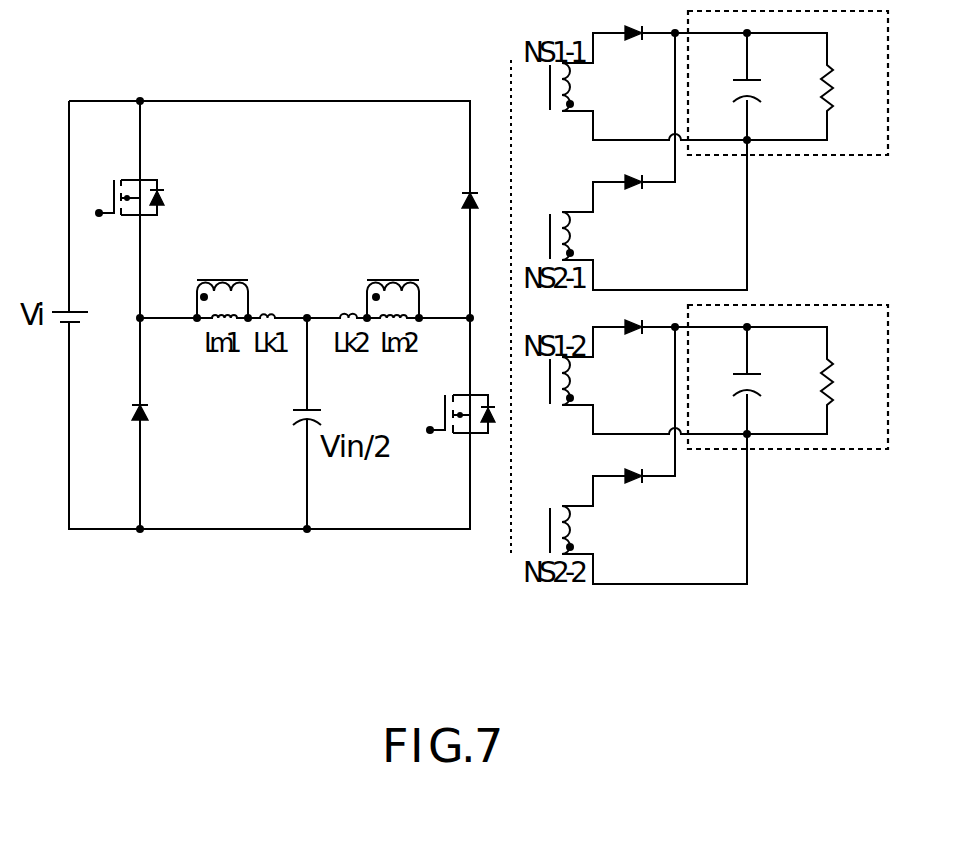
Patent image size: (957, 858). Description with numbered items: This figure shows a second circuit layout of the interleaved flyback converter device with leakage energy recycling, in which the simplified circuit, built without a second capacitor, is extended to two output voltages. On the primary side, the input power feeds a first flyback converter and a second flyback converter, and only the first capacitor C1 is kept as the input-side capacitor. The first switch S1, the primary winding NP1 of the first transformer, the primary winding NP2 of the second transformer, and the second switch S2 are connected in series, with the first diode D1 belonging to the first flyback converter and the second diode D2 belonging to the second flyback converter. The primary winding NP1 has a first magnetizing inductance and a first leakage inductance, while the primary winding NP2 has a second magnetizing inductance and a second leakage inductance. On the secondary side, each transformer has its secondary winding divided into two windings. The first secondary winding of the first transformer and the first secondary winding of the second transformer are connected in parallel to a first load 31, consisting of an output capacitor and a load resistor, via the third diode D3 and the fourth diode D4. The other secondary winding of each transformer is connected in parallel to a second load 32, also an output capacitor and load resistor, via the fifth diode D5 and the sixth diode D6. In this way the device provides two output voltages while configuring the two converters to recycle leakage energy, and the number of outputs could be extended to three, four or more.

The first load 31 is at (819, 156).
The second load 32 is at (822, 450).
The first switch S1 is at (125, 198).
The second switch S2 is at (454, 414).
The first diode D1 is at (124, 412).
The second diode D2 is at (454, 203).
The third diode D3 is at (637, 54).
The fourth diode D4 is at (637, 204).
The fifth diode D5 is at (637, 348).
The sixth diode D6 is at (637, 498).
The first capacitor C1 is at (290, 415).
The primary winding of the first transformer NP1 is at (222, 285).
The primary winding of the second transformer NP2 is at (393, 285).